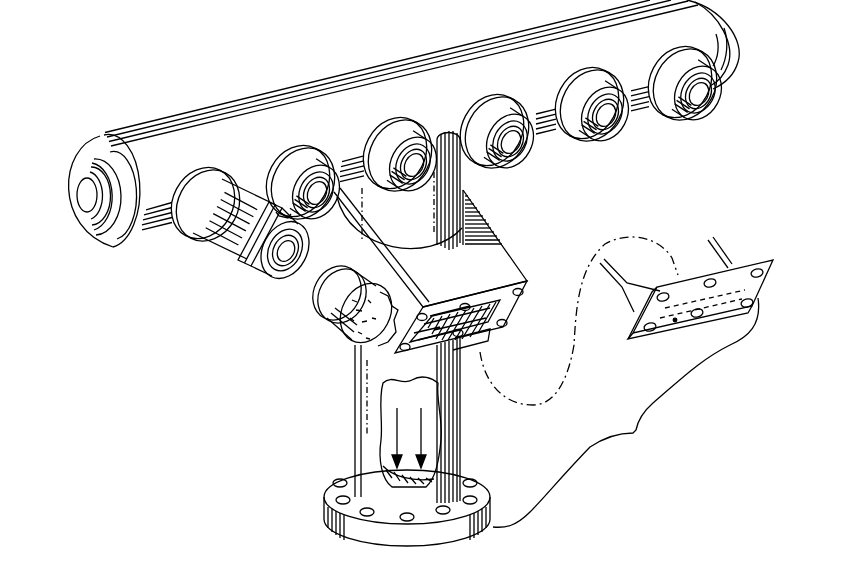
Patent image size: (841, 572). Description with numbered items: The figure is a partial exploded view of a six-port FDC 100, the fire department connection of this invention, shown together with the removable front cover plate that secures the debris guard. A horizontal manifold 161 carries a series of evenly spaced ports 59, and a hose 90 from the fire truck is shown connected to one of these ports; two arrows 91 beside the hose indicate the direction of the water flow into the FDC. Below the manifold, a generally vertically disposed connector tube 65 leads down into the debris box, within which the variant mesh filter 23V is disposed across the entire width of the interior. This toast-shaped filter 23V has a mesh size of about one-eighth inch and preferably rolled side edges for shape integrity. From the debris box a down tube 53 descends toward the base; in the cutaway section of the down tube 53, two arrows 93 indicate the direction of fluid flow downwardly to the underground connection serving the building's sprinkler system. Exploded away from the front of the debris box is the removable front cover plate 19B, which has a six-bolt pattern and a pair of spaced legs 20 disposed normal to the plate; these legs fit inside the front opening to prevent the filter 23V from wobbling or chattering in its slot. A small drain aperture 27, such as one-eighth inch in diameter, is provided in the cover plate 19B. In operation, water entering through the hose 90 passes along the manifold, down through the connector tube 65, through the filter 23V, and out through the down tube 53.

The FDC 100 is at (606, 193).
The manifold pipe 161 is at (448, 66).
The port 59 is at (197, 238).
The arrows 91 is at (322, 256).
The hose 90 is at (323, 330).
The connector tube 65 is at (463, 178).
The removable mesh filter 23V is at (491, 339).
The down tube 53 is at (456, 400).
The arrows 93 is at (383, 418).
The front cover plate 19B is at (768, 290).
The spaced legs 20 is at (720, 243).
The aperture 27 is at (675, 323).